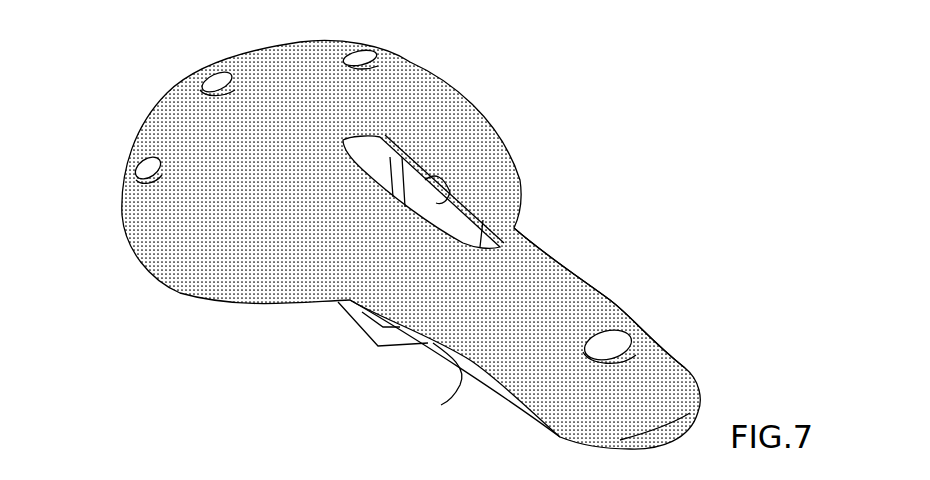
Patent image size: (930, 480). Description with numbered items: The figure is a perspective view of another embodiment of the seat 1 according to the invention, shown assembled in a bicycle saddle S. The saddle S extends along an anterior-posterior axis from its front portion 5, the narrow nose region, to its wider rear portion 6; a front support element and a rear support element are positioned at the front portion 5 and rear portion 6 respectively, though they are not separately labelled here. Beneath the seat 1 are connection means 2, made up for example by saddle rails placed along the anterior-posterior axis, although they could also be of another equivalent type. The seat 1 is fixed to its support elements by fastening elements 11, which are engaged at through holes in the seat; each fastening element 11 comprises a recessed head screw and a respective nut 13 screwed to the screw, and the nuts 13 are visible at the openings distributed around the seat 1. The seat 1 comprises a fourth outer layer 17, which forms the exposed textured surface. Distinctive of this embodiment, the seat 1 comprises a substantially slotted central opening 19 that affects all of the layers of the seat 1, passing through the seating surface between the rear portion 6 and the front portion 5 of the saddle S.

The seat 1 is at (537, 268).
The connection means 2 is at (356, 332).
The front portion 5 is at (535, 422).
The rear portion 6 is at (277, 54).
The fastening element 11 is at (178, 92).
The nut 13 is at (213, 78).
The fourth outer layer 17 is at (437, 382).
The central opening 19 is at (428, 174).
The bicycle saddle S is at (618, 289).